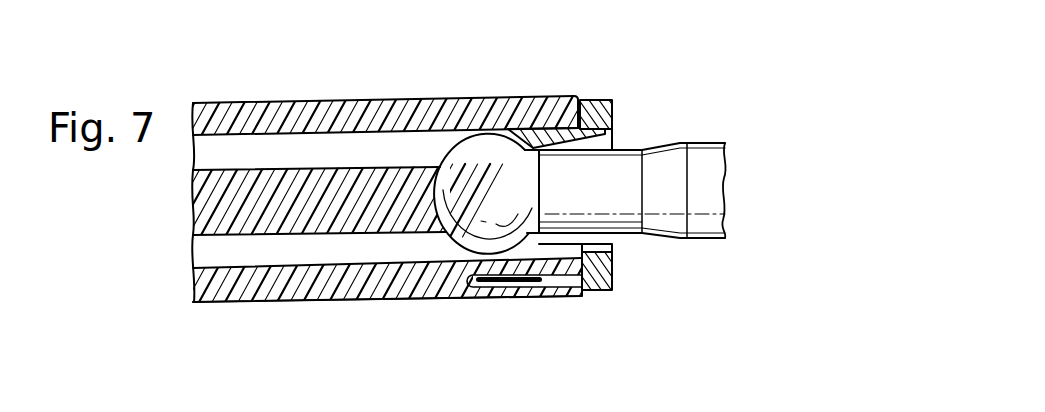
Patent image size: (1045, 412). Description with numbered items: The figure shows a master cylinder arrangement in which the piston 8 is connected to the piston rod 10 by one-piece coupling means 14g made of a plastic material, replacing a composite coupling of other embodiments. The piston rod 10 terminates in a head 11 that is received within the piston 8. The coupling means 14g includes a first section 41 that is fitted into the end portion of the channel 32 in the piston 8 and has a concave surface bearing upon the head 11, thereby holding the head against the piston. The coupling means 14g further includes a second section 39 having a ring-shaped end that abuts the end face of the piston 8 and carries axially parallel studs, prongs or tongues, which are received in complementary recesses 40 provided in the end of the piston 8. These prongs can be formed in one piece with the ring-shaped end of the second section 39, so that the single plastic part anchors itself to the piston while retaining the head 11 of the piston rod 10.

The piston 8 is at (386, 110).
The first section 41 is at (548, 128).
The one-piece coupling means 14g is at (620, 111).
The piston rod 10 is at (697, 238).
The head 11 is at (460, 222).
The channel 32 is at (319, 279).
The second section 39 is at (516, 279).
The recesses 40 is at (534, 290).